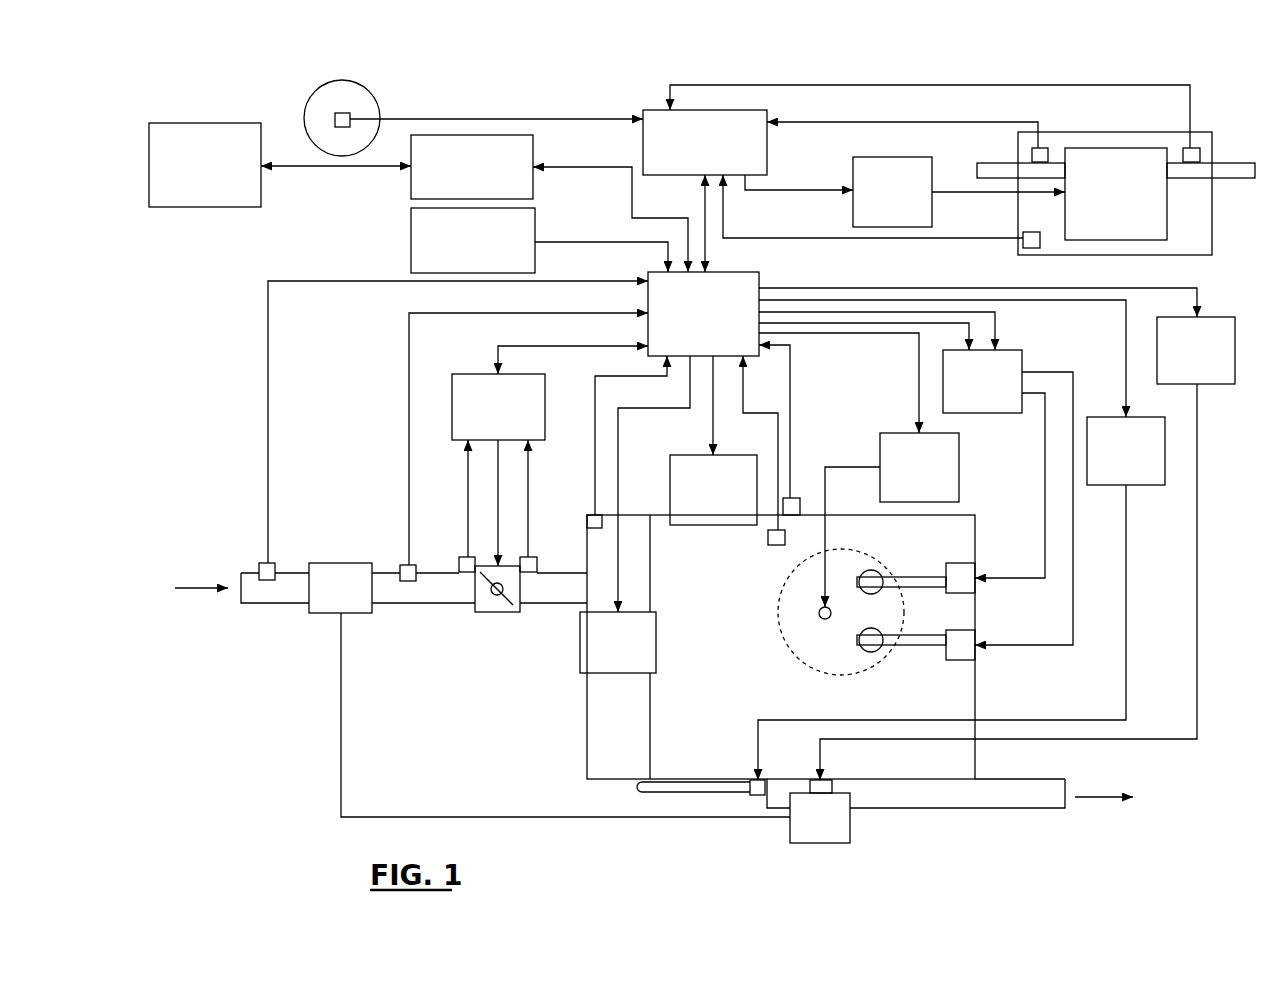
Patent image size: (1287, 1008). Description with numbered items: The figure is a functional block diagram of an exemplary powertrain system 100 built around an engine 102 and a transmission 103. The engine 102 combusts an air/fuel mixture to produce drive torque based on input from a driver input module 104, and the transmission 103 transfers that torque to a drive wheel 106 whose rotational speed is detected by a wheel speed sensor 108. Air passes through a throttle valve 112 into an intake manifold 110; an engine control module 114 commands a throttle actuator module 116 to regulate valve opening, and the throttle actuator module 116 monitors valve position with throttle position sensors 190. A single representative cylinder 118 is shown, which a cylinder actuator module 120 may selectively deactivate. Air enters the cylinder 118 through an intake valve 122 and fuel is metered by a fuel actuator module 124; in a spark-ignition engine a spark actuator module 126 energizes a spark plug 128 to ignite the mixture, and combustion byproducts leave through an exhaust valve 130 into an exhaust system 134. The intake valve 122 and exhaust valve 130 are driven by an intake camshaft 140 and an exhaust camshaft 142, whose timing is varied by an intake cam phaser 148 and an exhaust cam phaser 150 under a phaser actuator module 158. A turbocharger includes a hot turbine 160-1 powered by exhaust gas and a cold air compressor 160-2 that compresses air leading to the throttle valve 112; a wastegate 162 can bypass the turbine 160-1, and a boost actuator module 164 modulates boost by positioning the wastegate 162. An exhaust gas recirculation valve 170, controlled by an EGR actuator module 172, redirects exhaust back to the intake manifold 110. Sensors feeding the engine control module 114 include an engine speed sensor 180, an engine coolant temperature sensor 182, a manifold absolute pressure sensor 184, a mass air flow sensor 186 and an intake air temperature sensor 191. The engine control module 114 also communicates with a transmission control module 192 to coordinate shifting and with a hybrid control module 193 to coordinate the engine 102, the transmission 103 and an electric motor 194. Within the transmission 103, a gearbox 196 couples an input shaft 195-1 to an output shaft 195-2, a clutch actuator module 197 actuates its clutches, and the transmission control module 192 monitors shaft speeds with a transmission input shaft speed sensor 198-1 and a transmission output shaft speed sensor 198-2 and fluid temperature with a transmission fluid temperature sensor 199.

The powertrain system 100 is at (176, 110).
The engine 102 is at (975, 528).
The transmission 103 is at (1212, 150).
The driver input module 104 is at (411, 238).
The drive wheel 106 is at (376, 102).
The wheel speed sensor 108 is at (337, 115).
The intake manifold 110 is at (587, 718).
The throttle valve 112 is at (493, 612).
The engine control module 114 is at (759, 279).
The throttle actuator module 116 is at (475, 374).
The cylinder 118 is at (800, 665).
The cylinder actuator module 120 is at (725, 455).
The intake valve 122 is at (870, 568).
The fuel actuator module 124 is at (632, 673).
The spark actuator module 126 is at (959, 470).
The spark plug 128 is at (818, 616).
The exhaust valve 130 is at (870, 653).
The exhaust system 134 is at (1038, 808).
The intake camshaft 140 is at (925, 577).
The exhaust camshaft 142 is at (925, 645).
The intake cam phaser 148 is at (958, 563).
The exhaust cam phaser 150 is at (960, 660).
The phaser actuator module 158 is at (1022, 360).
The hot turbine 160-1 is at (850, 828).
The cold air compressor 160-2 is at (325, 613).
The wastegate 162 is at (832, 783).
The boost actuator module 164 is at (1212, 384).
The exhaust gas recirculation valve 170 is at (757, 797).
The EGR actuator module 172 is at (1143, 485).
The engine speed sensor 180 is at (798, 498).
The engine coolant temperature sensor 182 is at (776, 545).
The manifold absolute pressure sensor 184 is at (590, 515).
The mass air flow sensor 186 is at (402, 565).
The throttle position sensor 190 is at (462, 573).
The intake air temperature sensor 191 is at (259, 566).
The transmission control module 192 is at (767, 148).
The hybrid control module 193 is at (533, 150).
The electric motor 194 is at (205, 208).
The input shaft 195-1 is at (1003, 163).
The output shaft 195-2 is at (1225, 178).
The gearbox 196 is at (1115, 148).
The clutch actuator module 197 is at (855, 160).
The transmission input shaft speed sensor 198-1 is at (1045, 148).
The transmission output shaft speed sensor 198-2 is at (1195, 148).
The transmission fluid temperature sensor 199 is at (1031, 248).